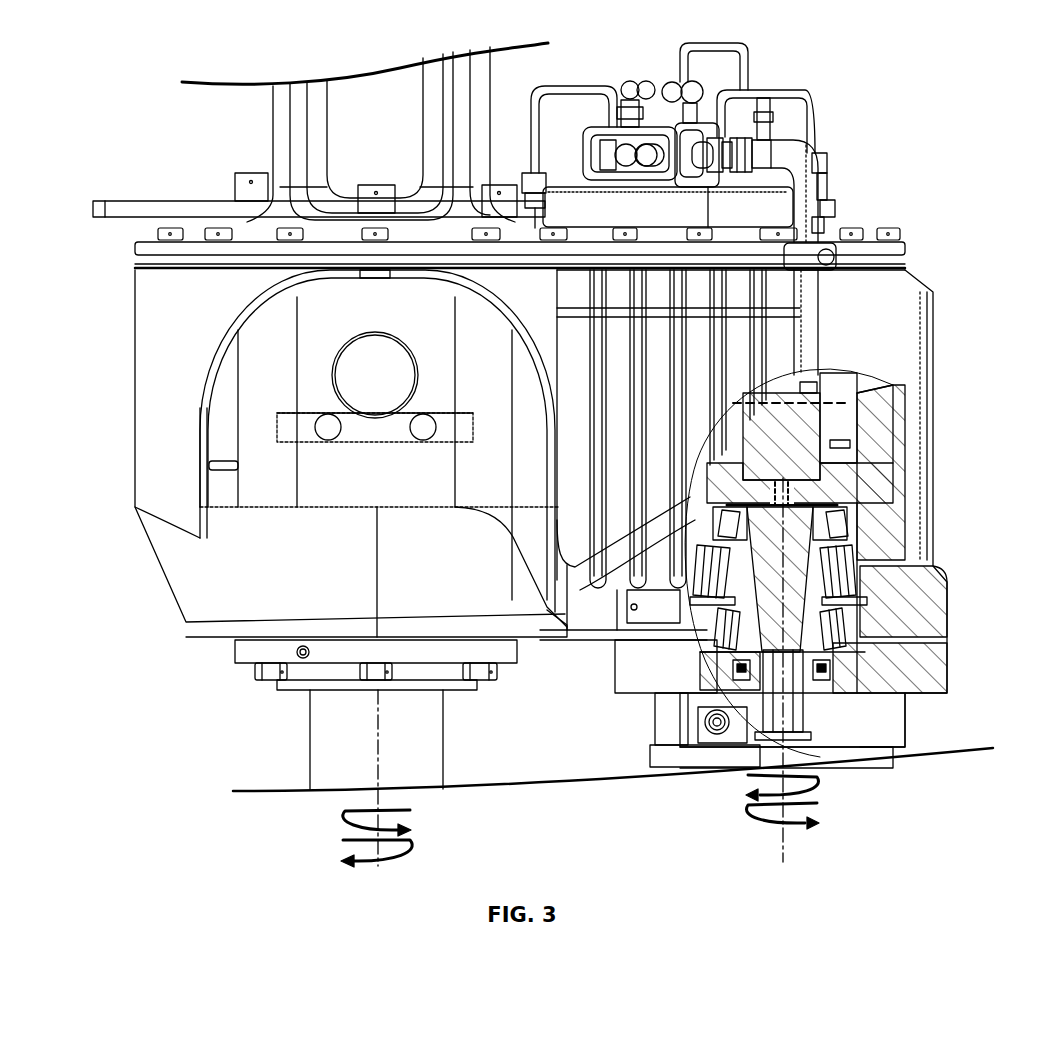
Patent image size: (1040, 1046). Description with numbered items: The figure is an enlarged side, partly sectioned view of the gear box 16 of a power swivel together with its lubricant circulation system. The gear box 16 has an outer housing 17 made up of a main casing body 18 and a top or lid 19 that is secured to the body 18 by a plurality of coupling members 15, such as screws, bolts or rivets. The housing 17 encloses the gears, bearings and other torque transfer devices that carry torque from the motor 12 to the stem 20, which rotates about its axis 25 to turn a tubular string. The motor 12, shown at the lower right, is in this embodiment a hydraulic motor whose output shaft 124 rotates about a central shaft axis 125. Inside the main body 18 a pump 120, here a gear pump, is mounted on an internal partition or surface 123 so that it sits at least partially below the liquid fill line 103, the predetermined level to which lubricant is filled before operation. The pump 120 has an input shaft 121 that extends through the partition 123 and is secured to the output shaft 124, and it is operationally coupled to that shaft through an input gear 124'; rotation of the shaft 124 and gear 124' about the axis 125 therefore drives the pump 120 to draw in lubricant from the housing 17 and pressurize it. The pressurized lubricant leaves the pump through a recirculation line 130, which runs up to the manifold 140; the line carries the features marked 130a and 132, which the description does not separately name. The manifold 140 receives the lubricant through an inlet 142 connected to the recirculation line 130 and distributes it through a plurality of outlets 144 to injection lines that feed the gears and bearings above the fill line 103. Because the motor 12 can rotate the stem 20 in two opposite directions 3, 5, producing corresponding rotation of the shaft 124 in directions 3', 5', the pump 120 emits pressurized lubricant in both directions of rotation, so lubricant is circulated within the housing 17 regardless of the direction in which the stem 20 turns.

The rotation direction 3 is at (352, 820).
The rotation direction 5 is at (394, 850).
The shaft rotation direction 3' is at (804, 785).
The shaft rotation direction 5' is at (758, 816).
The motor 12 is at (934, 727).
The coupling members 15 is at (168, 230).
The gear box 16 is at (112, 432).
The outer housing 17 is at (125, 312).
The main casing body 18 is at (152, 363).
The lid 19 is at (143, 256).
The stem 20 is at (310, 762).
The stem axis 25 is at (378, 728).
The liquid fill line 103 is at (847, 398).
The pump 120 is at (815, 433).
The input shaft 121 is at (790, 490).
The internal partition 123 is at (823, 477).
The output shaft 124 is at (841, 727).
The input gear 124' is at (854, 556).
The central shaft axis 125 is at (783, 608).
The recirculation line 130 is at (815, 325).
The hose coupling 130a is at (737, 133).
The hose fitting 132 is at (765, 140).
The manifold 140 is at (655, 110).
The inlet 142 is at (717, 128).
The outlets 144 is at (679, 114).